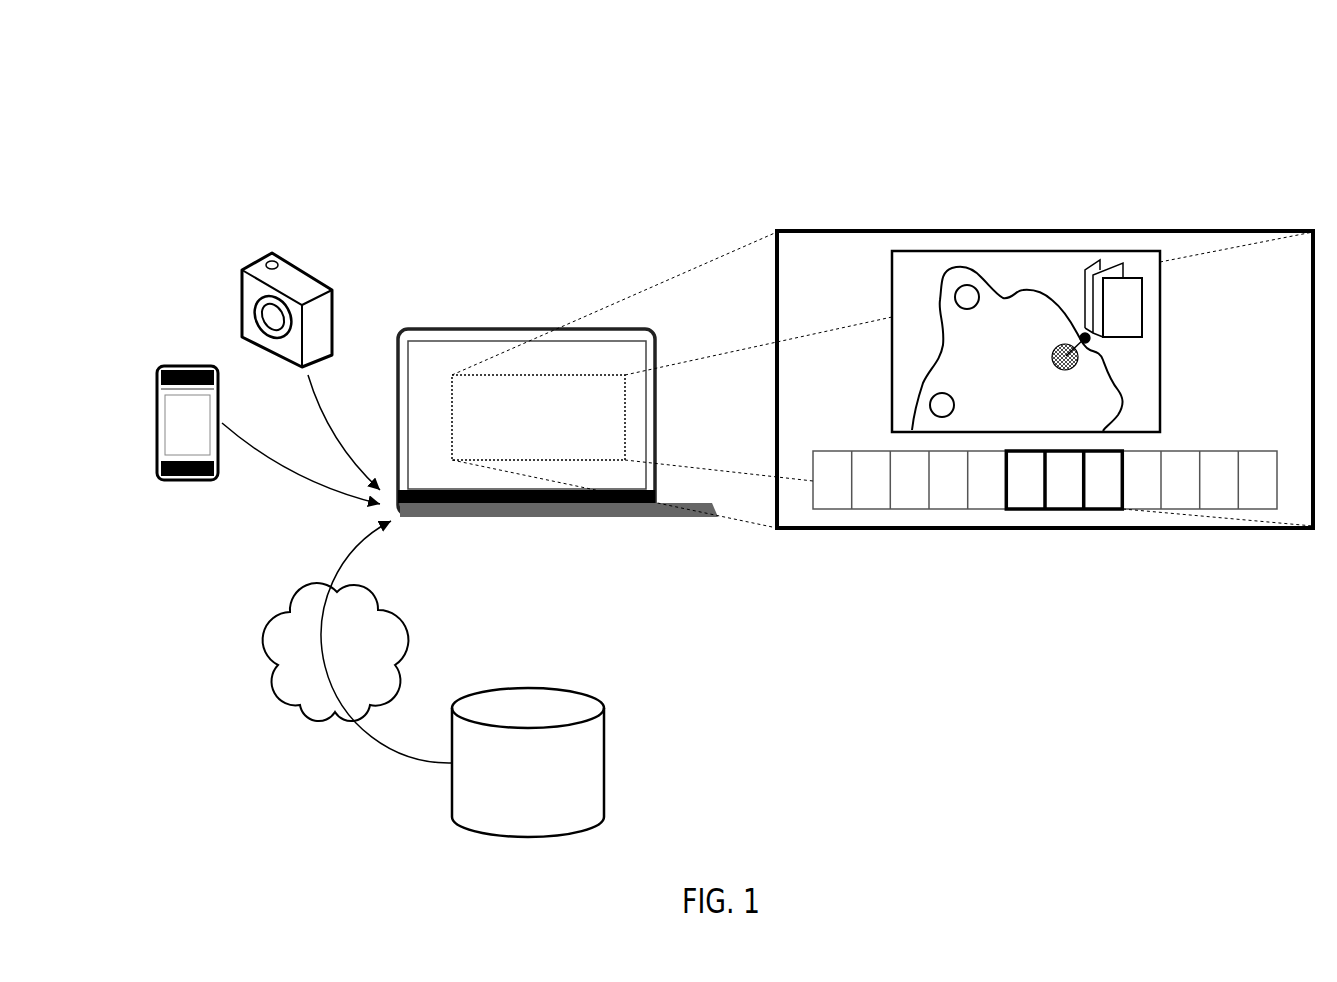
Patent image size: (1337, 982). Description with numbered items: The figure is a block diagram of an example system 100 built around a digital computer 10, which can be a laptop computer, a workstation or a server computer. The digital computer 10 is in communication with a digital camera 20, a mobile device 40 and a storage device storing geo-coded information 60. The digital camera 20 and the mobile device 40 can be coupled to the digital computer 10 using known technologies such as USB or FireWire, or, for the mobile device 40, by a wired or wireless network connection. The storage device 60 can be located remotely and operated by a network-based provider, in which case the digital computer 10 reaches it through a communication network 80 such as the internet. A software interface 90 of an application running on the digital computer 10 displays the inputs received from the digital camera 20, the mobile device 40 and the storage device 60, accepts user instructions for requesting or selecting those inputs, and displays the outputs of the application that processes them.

The system 100 is at (704, 51).
The digital computer 10 is at (433, 327).
The digital camera 20 is at (259, 252).
The mobile device 40 is at (156, 367).
The storage device storing geo-coded information 60 is at (542, 799).
The communication network 80 is at (352, 667).
The software interface 90 is at (1012, 228).